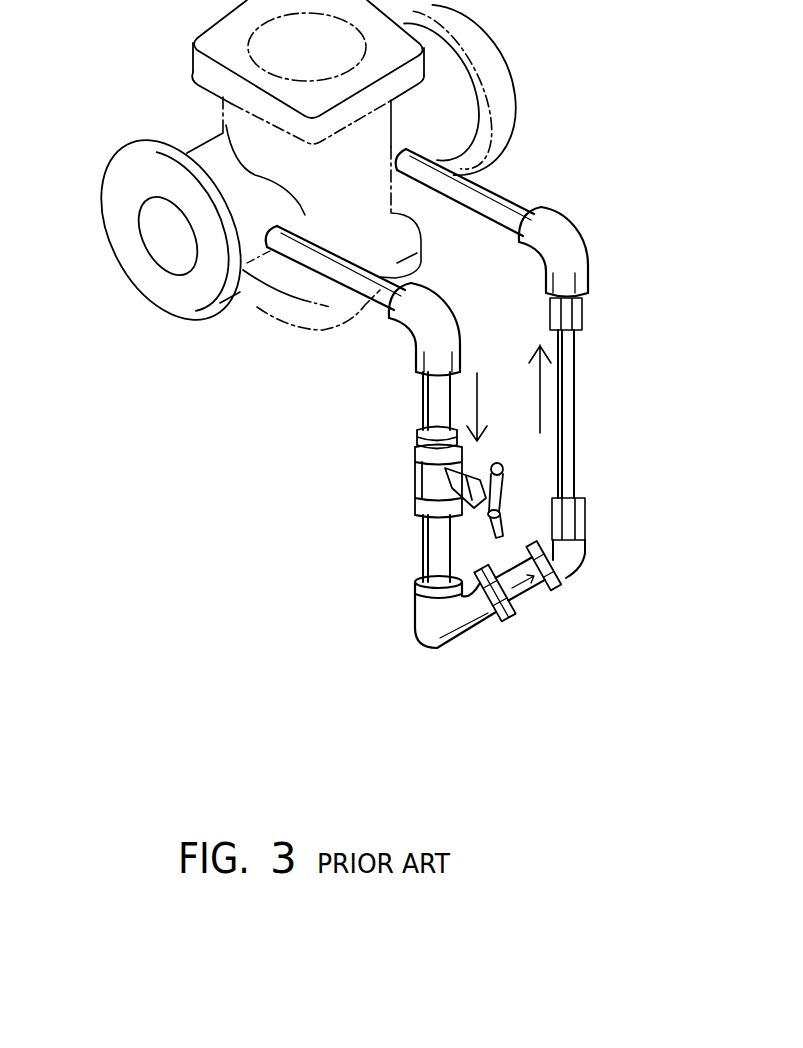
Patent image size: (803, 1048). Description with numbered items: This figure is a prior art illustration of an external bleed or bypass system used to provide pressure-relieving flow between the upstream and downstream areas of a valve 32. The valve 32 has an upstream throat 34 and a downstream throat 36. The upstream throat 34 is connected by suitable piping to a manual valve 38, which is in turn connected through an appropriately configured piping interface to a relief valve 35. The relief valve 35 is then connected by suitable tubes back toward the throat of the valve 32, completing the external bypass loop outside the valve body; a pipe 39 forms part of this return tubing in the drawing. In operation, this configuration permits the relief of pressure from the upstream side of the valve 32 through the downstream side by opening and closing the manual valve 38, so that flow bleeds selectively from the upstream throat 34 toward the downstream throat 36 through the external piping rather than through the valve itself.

The valve 32 is at (220, 133).
The upstream throat 34 is at (130, 213).
The downstream throat 36 is at (457, 113).
The manual valve 38 is at (427, 480).
The return pipe 39 is at (573, 470).
The relief valve 35 is at (548, 590).